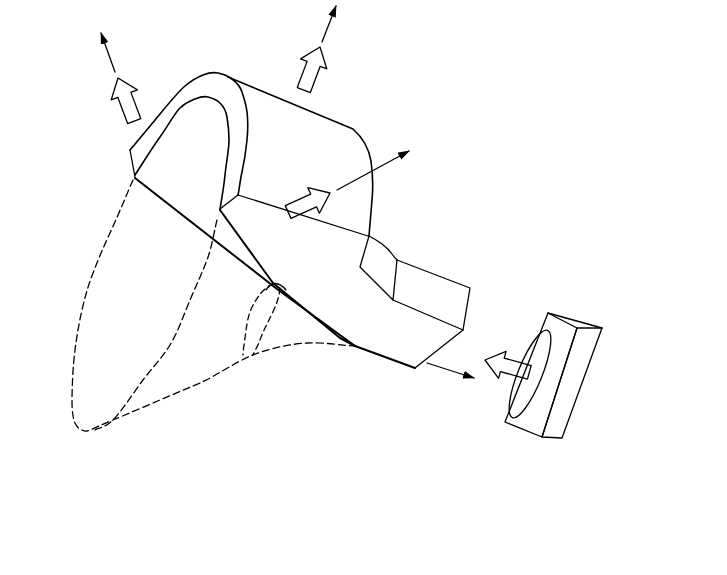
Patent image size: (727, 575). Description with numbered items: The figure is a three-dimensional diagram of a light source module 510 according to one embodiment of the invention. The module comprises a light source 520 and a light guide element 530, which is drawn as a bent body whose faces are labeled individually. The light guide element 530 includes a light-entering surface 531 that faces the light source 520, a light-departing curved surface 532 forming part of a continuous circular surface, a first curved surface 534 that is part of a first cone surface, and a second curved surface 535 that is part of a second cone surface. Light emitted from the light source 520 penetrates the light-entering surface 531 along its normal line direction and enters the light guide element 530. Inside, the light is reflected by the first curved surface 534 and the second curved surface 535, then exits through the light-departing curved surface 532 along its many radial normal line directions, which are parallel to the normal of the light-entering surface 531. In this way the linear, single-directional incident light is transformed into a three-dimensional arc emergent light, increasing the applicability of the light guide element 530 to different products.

The light source module 510 is at (612, 93).
The light source 520 is at (570, 387).
The light guide element 530 is at (378, 257).
The light-entering surface 531 is at (473, 308).
The light-departing curved surface 532 is at (335, 137).
The first curved surface 534 is at (180, 185).
The second curved surface 535 is at (283, 295).